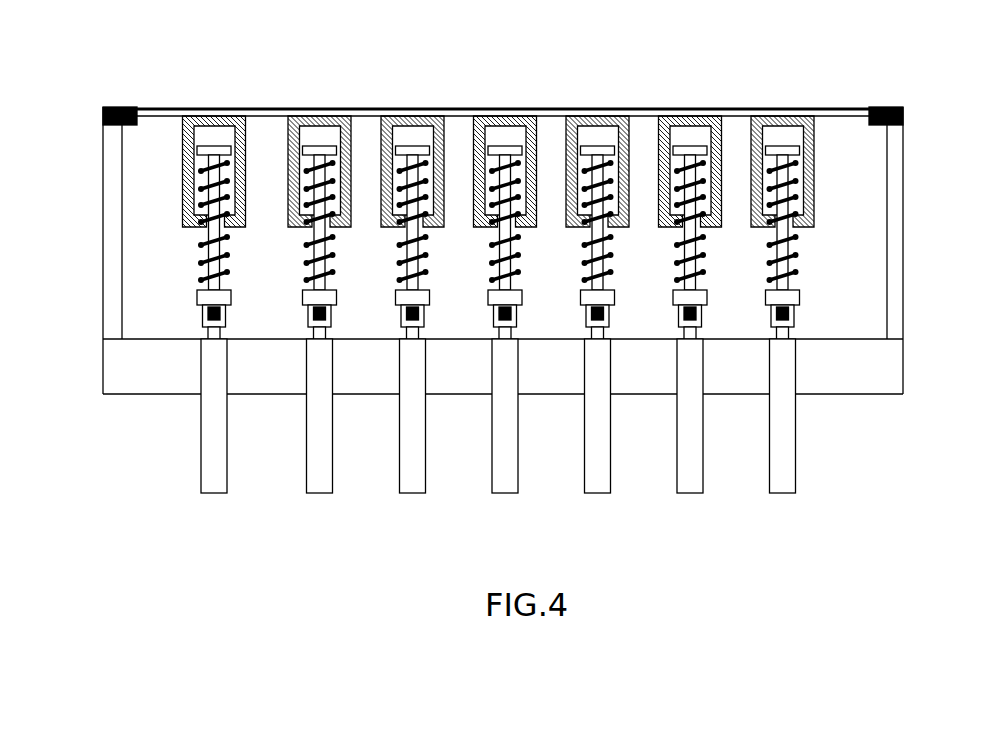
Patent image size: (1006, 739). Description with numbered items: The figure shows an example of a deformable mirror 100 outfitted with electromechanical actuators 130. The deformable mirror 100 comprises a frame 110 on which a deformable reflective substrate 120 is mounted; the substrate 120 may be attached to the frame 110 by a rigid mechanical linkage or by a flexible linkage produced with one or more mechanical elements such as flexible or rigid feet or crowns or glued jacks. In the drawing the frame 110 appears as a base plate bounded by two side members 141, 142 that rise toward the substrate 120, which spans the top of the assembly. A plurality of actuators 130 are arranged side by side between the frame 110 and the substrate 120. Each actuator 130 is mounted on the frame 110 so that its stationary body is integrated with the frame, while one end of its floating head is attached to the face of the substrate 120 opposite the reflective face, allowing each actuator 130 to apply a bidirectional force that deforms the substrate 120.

The deformable mirror 100 is at (499, 280).
The frame 110 is at (892, 372).
The deformable reflective substrate 120 is at (549, 108).
The actuator 130 is at (317, 487).
The left side wall 141 is at (110, 225).
The right side wall 142 is at (892, 232).